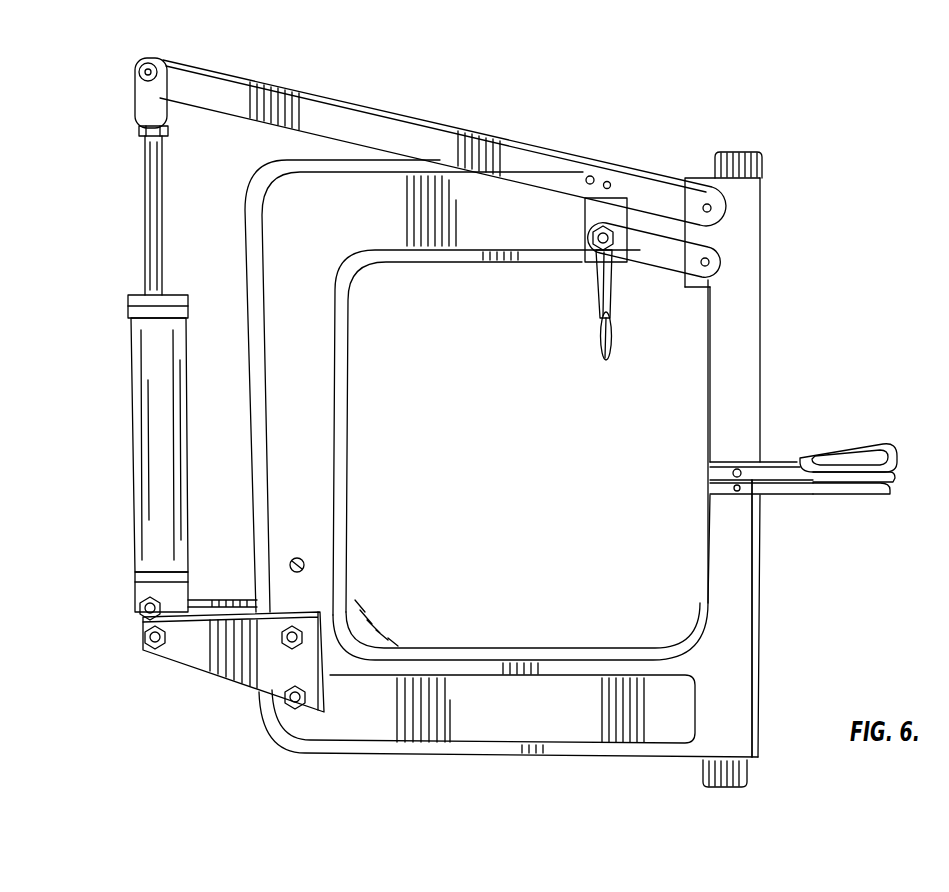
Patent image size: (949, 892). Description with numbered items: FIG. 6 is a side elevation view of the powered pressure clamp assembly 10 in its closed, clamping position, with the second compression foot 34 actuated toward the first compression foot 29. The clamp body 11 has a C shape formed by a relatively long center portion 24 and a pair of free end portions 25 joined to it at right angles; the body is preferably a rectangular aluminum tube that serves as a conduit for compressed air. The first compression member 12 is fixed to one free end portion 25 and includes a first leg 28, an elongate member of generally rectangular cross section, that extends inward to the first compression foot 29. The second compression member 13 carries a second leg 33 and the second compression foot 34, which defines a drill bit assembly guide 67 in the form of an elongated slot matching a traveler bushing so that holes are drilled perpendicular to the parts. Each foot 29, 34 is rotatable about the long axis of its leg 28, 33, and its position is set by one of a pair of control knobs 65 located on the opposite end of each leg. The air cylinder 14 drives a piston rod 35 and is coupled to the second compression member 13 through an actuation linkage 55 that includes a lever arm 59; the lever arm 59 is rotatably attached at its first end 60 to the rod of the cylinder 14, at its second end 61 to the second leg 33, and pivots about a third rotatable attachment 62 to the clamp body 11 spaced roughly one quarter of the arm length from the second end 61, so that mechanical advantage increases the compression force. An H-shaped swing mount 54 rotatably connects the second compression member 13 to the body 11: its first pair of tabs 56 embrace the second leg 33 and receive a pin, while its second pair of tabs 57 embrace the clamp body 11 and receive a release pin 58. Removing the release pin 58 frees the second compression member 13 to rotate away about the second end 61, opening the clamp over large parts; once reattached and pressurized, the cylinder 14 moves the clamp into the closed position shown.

The pressure clamp assembly 10 is at (829, 144).
The clamp body 11 is at (327, 432).
The first compression member 12 is at (748, 603).
The second compression member 13 is at (752, 342).
The air cylinder 14 is at (143, 442).
The center portion 24 is at (330, 505).
The free end portions 25 is at (535, 243).
The first leg 28 is at (742, 660).
The first compression foot 29 is at (820, 492).
The second leg 33 is at (743, 400).
The second compression foot 34 is at (782, 460).
The piston rod 35 is at (152, 223).
The swing mount 54 is at (672, 252).
The actuation linkage 55 is at (277, 82).
The first pair of tabs 56 is at (712, 265).
The second pair of tabs 57 is at (617, 230).
The release pin 58 is at (612, 352).
The lever arm 59 is at (397, 130).
The first end 60 is at (172, 66).
The second end 61 is at (712, 208).
The third rotatable attachment 62 is at (595, 178).
The control knobs 65 is at (728, 153).
The drill bit assembly guide 67 is at (867, 445).